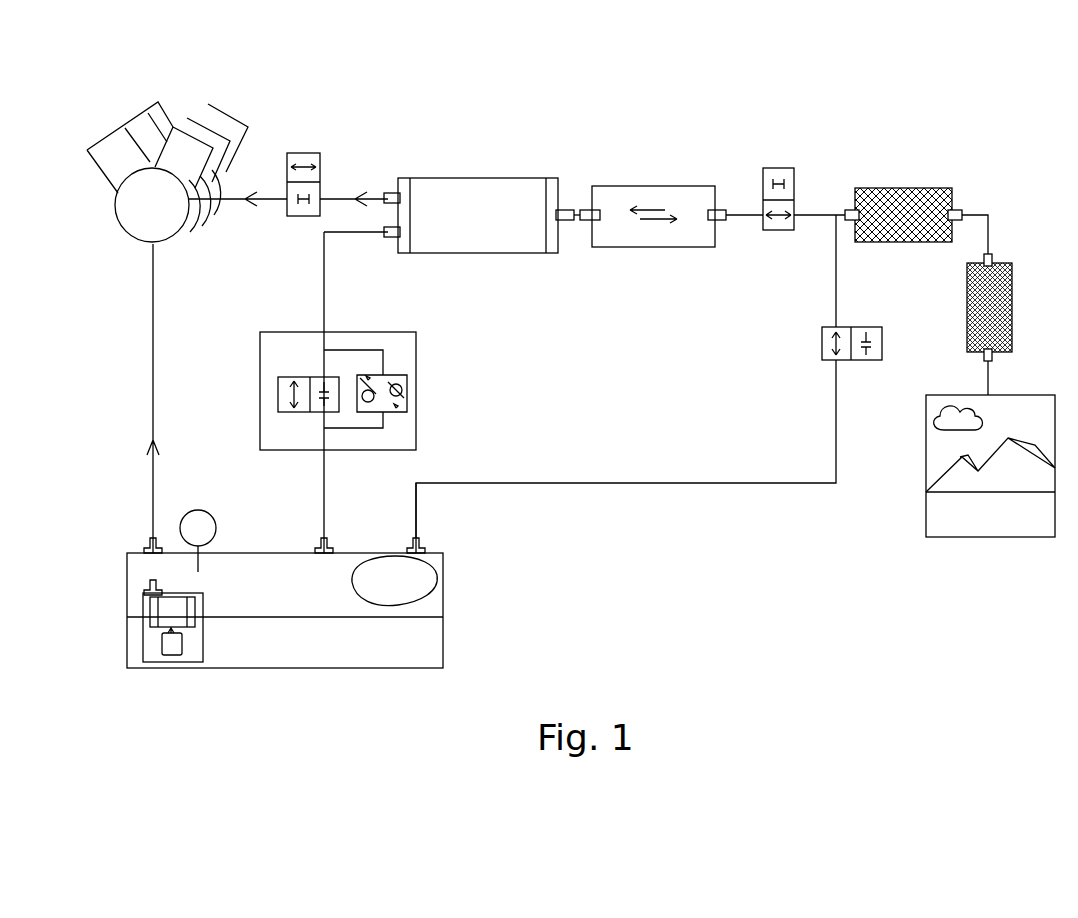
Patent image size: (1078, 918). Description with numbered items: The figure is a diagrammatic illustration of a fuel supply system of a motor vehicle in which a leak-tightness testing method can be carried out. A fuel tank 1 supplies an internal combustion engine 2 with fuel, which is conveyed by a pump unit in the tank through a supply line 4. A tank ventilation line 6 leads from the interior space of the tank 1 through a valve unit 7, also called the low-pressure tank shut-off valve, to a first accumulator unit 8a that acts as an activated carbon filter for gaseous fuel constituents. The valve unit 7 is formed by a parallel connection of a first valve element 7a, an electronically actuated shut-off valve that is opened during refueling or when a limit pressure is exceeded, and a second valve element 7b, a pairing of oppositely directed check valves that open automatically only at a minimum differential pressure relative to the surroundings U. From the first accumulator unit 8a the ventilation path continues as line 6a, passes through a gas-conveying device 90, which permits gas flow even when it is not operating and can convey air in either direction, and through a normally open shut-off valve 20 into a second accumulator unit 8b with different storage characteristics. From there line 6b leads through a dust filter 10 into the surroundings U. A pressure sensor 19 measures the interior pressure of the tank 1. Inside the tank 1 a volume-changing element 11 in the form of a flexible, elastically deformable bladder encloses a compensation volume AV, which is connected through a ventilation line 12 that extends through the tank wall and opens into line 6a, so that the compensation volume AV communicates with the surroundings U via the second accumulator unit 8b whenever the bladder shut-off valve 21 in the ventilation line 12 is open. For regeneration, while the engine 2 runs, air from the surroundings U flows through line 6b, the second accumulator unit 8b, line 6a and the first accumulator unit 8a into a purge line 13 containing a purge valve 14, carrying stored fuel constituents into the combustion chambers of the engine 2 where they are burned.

The tank 1 is at (257, 553).
The internal combustion engine 2 is at (148, 207).
The supply line 4 is at (151, 343).
The tank ventilation line 6 is at (327, 503).
The line 6a is at (575, 213).
The line 6b is at (988, 215).
The valve unit 7 is at (297, 332).
The first valve element 7a is at (278, 388).
The second valve element 7b is at (410, 390).
The first accumulator unit 8a is at (490, 232).
The second accumulator unit 8b is at (903, 230).
The dust filter 10 is at (1005, 298).
The volume-changing element 11 is at (370, 558).
The ventilation line 12 is at (834, 296).
The purge line 13 is at (330, 199).
The purge valve 14 is at (308, 153).
The pressure sensor 19 is at (203, 510).
The shut-off valve 20 is at (778, 232).
The shut-off valve 21 is at (822, 342).
The gas-conveying device 90 is at (655, 248).
The surroundings U is at (988, 537).
The compensation volume AV is at (425, 592).